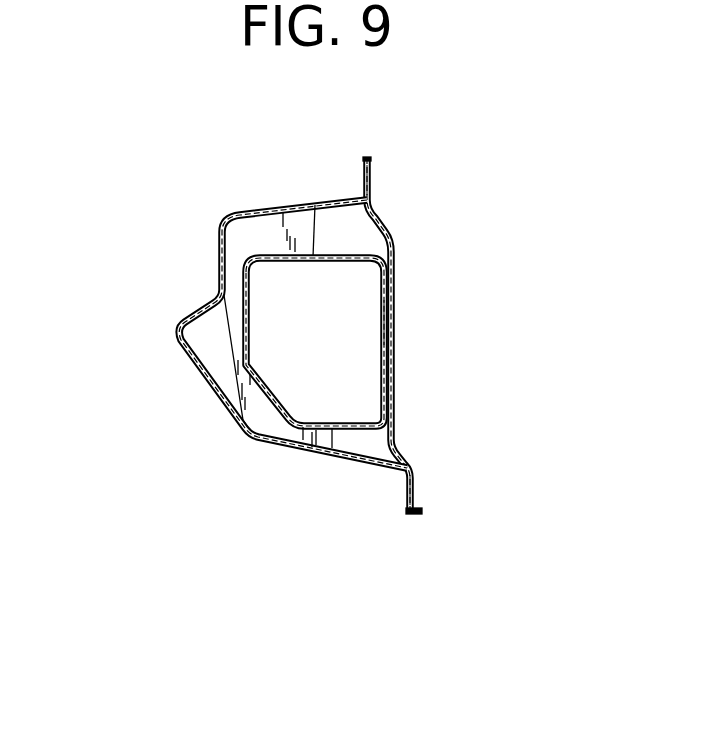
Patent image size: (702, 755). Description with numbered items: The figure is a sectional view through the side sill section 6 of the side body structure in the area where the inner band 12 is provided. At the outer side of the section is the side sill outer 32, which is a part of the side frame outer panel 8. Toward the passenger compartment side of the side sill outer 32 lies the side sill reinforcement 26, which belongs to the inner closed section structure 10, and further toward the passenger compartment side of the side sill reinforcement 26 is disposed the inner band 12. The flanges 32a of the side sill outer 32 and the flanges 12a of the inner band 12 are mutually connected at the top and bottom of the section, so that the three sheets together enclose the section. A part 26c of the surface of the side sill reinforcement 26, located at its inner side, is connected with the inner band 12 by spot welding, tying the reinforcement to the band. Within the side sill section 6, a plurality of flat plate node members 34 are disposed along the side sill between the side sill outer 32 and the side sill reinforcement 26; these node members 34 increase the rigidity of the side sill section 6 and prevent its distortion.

The side sill section 6 is at (212, 163).
The side frame outer panel 8 is at (238, 334).
The side sill outer 32 is at (196, 366).
The flanges of the side sill outer 32a is at (362, 168).
The inner band 12 is at (393, 241).
The flanges of the inner band 12a is at (372, 178).
The inner closed section structure 10 is at (403, 355).
The side sill reinforcement 26 is at (360, 432).
The part of the surface of the side sill reinforcement 26c is at (384, 342).
The flat plate node members 34 is at (260, 415).